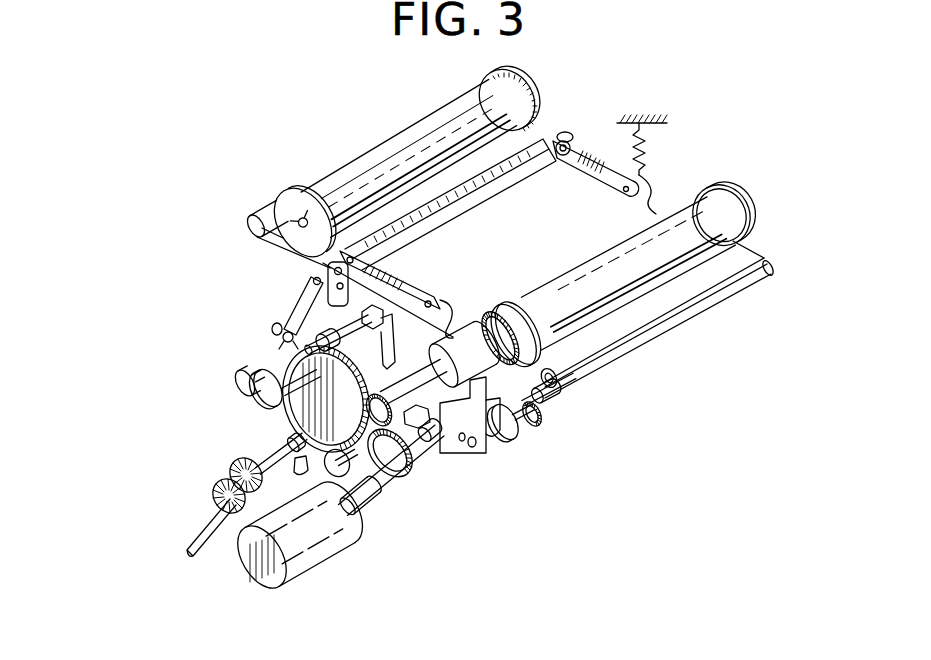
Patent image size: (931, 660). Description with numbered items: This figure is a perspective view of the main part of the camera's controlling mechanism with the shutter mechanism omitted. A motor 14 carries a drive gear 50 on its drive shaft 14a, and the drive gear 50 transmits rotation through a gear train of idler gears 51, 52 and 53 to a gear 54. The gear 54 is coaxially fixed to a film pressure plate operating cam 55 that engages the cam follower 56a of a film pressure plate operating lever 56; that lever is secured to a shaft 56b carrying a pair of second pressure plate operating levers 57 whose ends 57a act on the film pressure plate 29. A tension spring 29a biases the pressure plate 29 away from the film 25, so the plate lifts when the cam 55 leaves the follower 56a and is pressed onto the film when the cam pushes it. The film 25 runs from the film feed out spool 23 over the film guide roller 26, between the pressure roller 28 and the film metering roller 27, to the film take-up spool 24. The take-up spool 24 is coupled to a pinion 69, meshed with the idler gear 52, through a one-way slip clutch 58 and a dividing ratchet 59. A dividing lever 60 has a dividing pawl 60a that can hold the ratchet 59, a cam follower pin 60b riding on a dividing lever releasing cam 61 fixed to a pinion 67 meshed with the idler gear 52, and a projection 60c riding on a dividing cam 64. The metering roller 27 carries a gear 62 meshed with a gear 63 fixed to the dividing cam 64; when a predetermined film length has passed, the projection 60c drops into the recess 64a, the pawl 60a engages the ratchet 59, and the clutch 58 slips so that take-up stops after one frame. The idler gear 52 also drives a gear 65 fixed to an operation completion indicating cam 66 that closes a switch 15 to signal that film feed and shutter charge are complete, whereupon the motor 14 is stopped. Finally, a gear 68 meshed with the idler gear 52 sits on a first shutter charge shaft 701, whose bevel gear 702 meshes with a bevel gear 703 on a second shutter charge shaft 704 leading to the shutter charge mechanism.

The motor 14 is at (319, 543).
The drive shaft 14a is at (356, 523).
The switch 15 is at (393, 332).
The film feed out spool 23 is at (520, 106).
The film take-up spool 24 is at (728, 208).
The film 25 is at (272, 241).
The film guide roller 26 is at (252, 222).
The film metering roller 27 is at (556, 383).
The pressure roller 28 is at (617, 352).
The film pressure plate 29 is at (651, 212).
The tension spring 29a is at (648, 151).
The drive gear 50 is at (382, 494).
The idler gear 51 is at (399, 476).
The idler gear 52 is at (298, 412).
The idler gear 53 is at (258, 397).
The gear 54 is at (236, 377).
The film pressure plate operating cam 55 is at (300, 346).
The film pressure plate operating lever 56 is at (287, 313).
The cam follower 56a is at (271, 330).
The shaft 56b is at (452, 199).
The second pressure plate operating levers 57 is at (600, 163).
The end of second pressure plate operating lever 57a is at (438, 306).
The one-way slip clutch 58 is at (460, 340).
The dividing ratchet 59 is at (550, 369).
The dividing lever 60 is at (446, 430).
The dividing pawl 60a is at (480, 442).
The cam follower pin 60b is at (440, 433).
The projection 60c is at (498, 440).
The dividing lever releasing cam 61 is at (429, 440).
The gear 62 is at (550, 399).
The gear 63 is at (541, 425).
The dividing cam 64 is at (512, 438).
The recess 64a is at (528, 425).
The gear 65 is at (325, 399).
The operation completion indicating cam 66 is at (307, 291).
The pinion 67 is at (333, 479).
The gear 68 is at (301, 465).
The pinion 69 is at (368, 413).
The first shutter charge shaft 701 is at (265, 455).
The bevel gear 702 is at (229, 472).
The bevel gear 703 is at (222, 495).
The second shutter charge shaft 704 is at (196, 546).